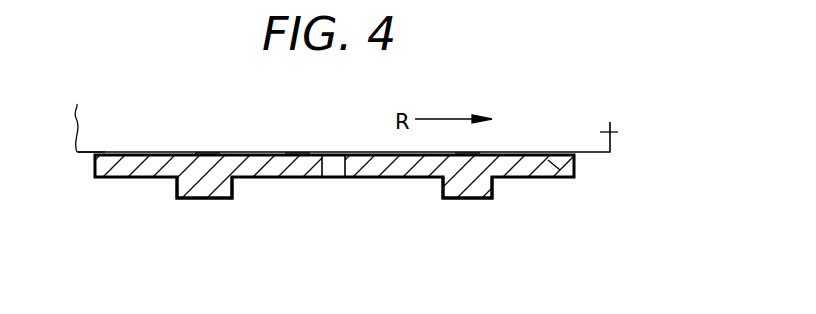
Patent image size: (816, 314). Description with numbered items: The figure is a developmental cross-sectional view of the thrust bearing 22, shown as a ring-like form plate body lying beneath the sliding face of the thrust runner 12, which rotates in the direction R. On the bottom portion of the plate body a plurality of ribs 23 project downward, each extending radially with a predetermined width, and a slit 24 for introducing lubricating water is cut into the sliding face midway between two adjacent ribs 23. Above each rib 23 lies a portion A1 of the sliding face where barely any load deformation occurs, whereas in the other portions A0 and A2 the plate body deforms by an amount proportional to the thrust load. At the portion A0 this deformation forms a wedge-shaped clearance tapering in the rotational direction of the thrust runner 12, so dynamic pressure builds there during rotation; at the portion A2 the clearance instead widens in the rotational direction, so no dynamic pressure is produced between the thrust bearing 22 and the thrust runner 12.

The thrust runner 12 is at (618, 132).
The thrust bearing 22 is at (253, 178).
The rib 23 is at (208, 192).
The slit 24 is at (333, 175).
The portion A0 is at (102, 150).
The portion A1 is at (208, 152).
The portion A2 is at (295, 150).